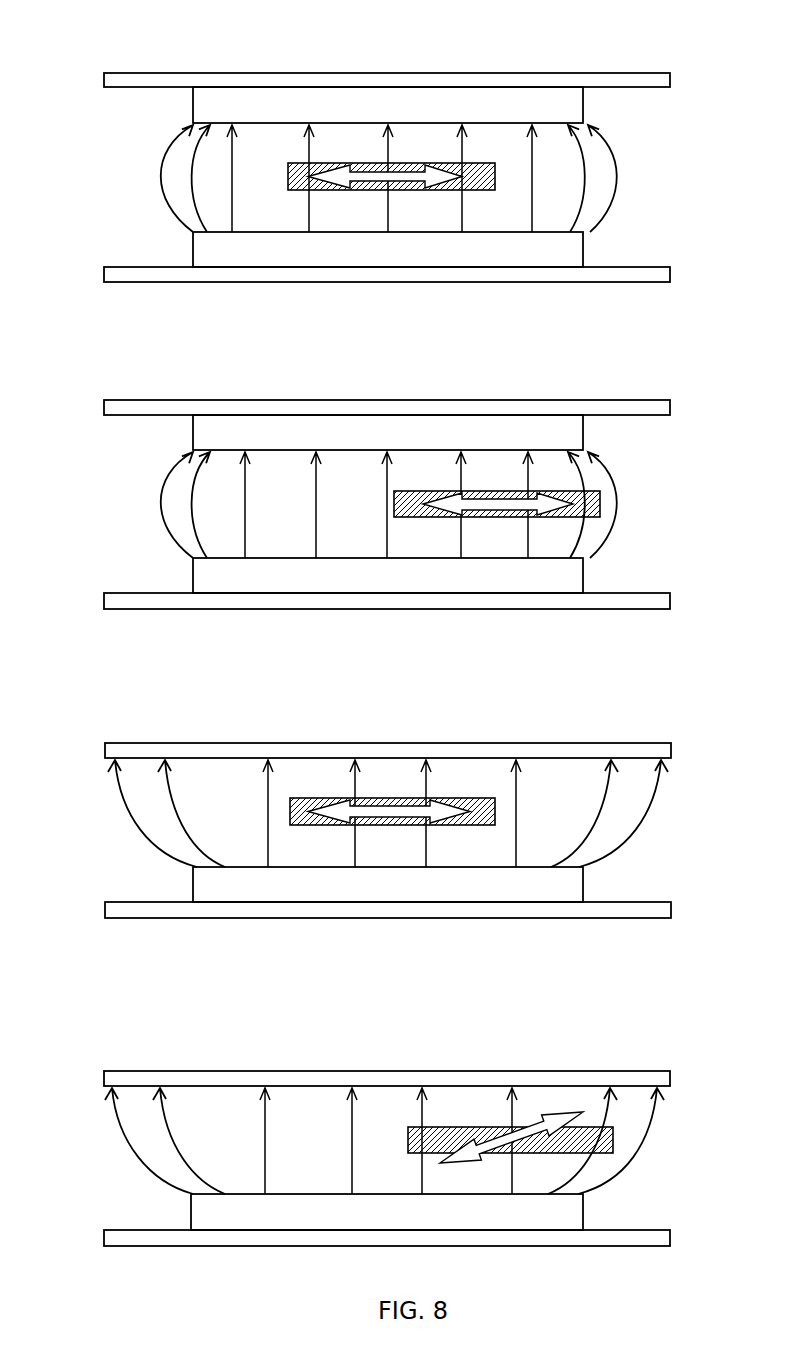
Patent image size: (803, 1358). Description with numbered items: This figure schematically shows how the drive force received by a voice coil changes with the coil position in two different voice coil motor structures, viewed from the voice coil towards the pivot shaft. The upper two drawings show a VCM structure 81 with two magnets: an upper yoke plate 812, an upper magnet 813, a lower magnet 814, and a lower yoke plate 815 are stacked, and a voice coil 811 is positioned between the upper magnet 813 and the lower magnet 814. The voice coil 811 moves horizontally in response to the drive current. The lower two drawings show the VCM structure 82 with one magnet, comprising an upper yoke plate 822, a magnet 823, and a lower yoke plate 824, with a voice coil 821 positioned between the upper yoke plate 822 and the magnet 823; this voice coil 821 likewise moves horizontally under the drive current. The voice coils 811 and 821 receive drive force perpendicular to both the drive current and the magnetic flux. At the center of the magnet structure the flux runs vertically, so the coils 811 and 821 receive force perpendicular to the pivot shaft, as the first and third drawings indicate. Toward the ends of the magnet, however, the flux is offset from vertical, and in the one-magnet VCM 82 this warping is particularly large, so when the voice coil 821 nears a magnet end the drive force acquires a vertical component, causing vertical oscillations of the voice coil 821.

The VCM structure 81 is at (569, 21).
The voice coil 811 is at (490, 190).
The upper yoke plate 812 is at (123, 88).
The upper magnet 813 is at (192, 107).
The lower magnet 814 is at (193, 247).
The lower yoke plate 815 is at (135, 285).
The VCM structure 82 is at (576, 728).
The voice coil 821 is at (490, 827).
The upper yoke plate 822 is at (187, 743).
The magnet 823 is at (193, 882).
The lower yoke plate 824 is at (218, 918).